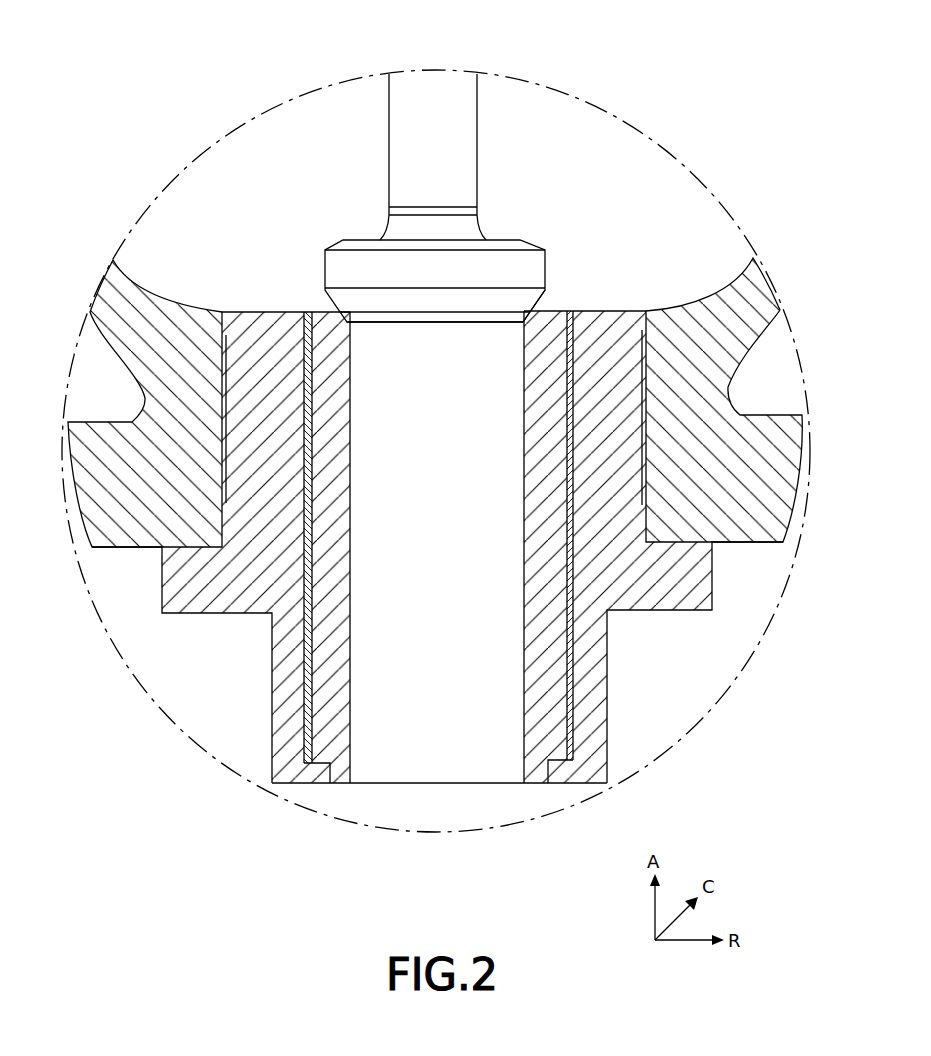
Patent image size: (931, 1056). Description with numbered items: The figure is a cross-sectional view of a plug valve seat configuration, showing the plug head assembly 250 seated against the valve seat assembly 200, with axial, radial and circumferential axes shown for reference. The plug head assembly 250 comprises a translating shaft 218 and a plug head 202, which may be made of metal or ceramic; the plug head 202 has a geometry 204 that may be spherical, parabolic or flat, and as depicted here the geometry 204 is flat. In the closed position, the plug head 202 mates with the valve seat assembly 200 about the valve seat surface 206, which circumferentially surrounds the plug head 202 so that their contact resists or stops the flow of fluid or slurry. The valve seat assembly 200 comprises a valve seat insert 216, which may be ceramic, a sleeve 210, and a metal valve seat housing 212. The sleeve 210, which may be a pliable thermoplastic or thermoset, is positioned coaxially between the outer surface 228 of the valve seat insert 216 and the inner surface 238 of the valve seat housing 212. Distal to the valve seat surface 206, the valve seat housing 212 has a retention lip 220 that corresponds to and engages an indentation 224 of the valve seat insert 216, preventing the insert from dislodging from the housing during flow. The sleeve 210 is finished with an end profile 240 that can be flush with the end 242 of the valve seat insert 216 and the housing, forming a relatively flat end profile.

The valve seat assembly 200 is at (236, 653).
The plug head 202 is at (533, 264).
The geometry 204 is at (445, 323).
The valve seat surface 206 is at (345, 322).
The sleeve 210 is at (308, 687).
The valve seat housing 212 is at (573, 717).
The valve seat insert 216 is at (535, 470).
The translating shaft 218 is at (462, 148).
The retention lip 220 is at (311, 774).
The indentation 224 is at (558, 765).
The outer surface 228 is at (567, 652).
The inner surface 238 is at (305, 720).
The end profile 240 is at (305, 311).
The end 242 is at (540, 312).
The plug head assembly 250 is at (348, 156).